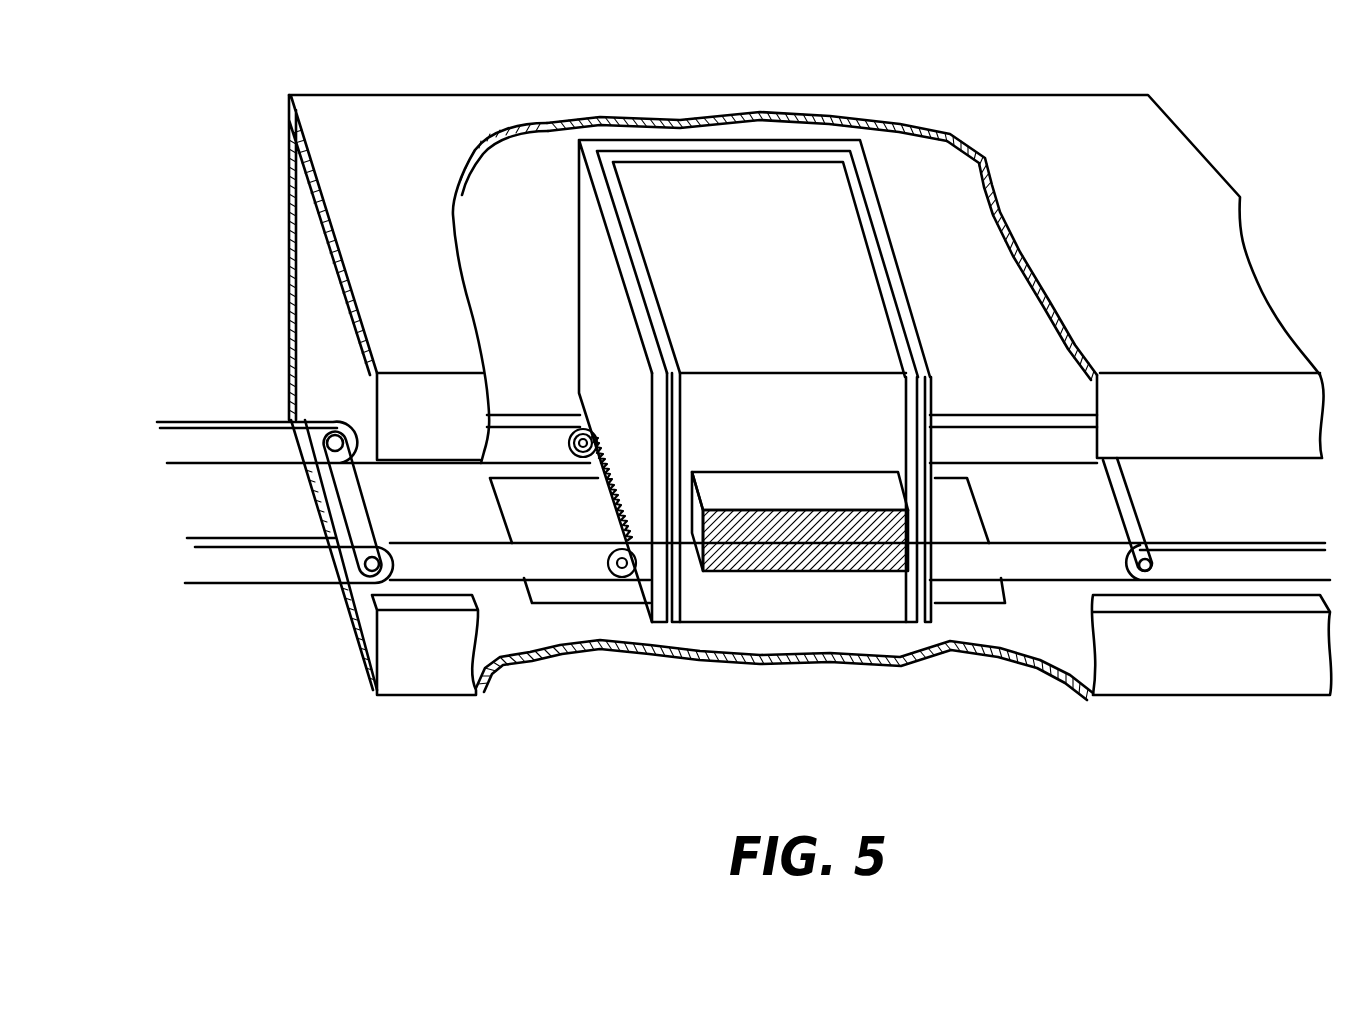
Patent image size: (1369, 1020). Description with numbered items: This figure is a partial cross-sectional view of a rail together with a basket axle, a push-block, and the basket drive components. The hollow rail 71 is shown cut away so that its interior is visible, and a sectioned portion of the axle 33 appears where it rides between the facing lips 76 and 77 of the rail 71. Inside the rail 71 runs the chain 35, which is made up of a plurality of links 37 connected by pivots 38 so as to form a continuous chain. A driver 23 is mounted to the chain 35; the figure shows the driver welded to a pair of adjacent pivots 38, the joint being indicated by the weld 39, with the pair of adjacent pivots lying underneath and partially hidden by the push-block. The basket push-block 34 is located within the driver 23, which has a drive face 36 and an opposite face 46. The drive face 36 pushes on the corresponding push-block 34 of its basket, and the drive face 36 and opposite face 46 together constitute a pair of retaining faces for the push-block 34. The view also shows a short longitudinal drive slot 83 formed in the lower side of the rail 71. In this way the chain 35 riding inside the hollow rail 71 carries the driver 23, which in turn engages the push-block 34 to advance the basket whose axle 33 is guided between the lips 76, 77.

The rail 71 is at (1145, 163).
The lip 76 is at (1210, 460).
The lip 77 is at (1110, 600).
The link 37 is at (180, 445).
The chain 35 is at (260, 598).
The pivot 38 is at (340, 483).
The weld 39 is at (607, 515).
The drive slot 83 is at (958, 515).
The driver 23 is at (597, 250).
The push-block 34 is at (678, 212).
The opposite face 46 is at (670, 560).
The drive face 36 is at (908, 587).
The axle 33 is at (767, 487).